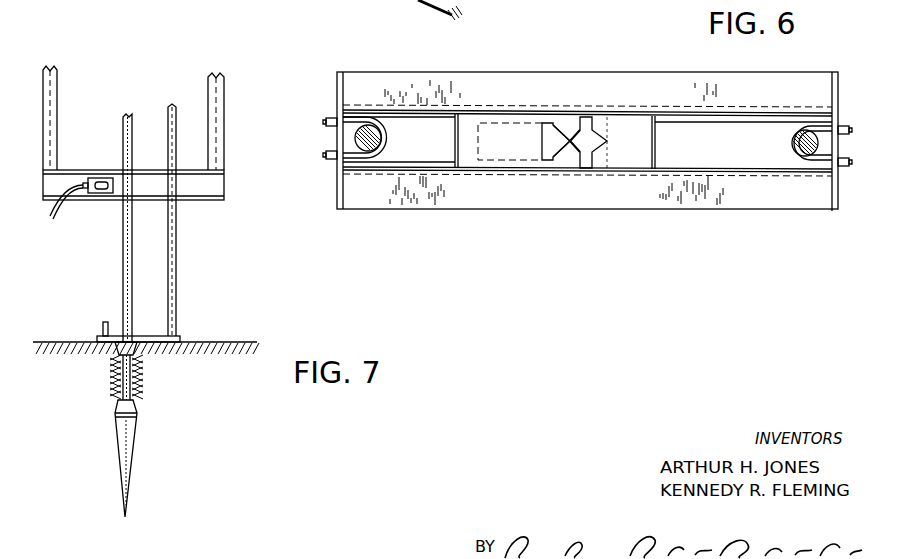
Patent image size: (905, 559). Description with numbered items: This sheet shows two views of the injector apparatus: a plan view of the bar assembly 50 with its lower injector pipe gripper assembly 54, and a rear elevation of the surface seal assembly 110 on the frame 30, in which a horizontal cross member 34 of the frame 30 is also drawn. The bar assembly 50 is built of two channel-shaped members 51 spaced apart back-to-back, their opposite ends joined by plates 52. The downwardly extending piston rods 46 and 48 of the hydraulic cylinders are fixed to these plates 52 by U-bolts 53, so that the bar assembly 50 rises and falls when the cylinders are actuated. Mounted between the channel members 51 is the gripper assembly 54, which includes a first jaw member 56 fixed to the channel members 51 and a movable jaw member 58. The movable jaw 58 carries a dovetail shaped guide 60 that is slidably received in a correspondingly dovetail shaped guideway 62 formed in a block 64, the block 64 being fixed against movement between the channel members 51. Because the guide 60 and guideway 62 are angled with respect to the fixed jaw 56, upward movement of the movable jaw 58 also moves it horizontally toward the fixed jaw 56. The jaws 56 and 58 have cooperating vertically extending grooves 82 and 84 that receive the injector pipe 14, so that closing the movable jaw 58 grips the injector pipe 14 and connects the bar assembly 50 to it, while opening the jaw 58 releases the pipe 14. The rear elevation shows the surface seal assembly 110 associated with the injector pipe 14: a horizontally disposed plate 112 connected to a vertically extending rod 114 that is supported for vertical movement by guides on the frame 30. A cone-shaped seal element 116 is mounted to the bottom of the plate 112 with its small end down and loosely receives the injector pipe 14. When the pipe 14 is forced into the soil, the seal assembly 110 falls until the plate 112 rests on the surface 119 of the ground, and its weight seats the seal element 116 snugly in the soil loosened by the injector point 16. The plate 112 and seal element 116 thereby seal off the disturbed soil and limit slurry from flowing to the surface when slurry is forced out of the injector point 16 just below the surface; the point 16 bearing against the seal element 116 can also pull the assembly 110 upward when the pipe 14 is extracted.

In FIG. 7, the injector pipe 14 is at (124, 267).
In FIG. 7, the injector point 16 is at (134, 468).
In FIG. 7, the frame 30 is at (65, 102).
In FIG. 7, the cross bar with junction box 34 is at (202, 190).
In FIG. 6, the piston rod 46 is at (800, 138).
In FIG. 6, the piston rod 48 is at (378, 133).
In FIG. 6, the bar assembly 50 is at (658, 89).
In FIG. 6, the channel-shaped members 51 is at (393, 80).
In FIG. 6, the plates 52 is at (337, 92).
In FIG. 6, the U-bolts 53 is at (385, 150).
In FIG. 6, the lower injector pipe gripper assembly 54 is at (654, 148).
In FIG. 6, the first jaw member 56 is at (638, 156).
In FIG. 6, the movable jaw member 58 is at (560, 119).
In FIG. 6, the dovetail shaped guide 60 is at (547, 148).
In FIG. 6, the dovetail shaped guideway 62 is at (545, 137).
In FIG. 6, the block 64 is at (468, 156).
In FIG. 6, the vertically extending groove 82 is at (597, 137).
In FIG. 6, the vertically extending groove 84 is at (575, 137).
In FIG. 7, the surface seal assembly 110 is at (181, 340).
In FIG. 7, the horizontally disposed plate 112 is at (146, 338).
In FIG. 7, the vertically extending rod 114 is at (176, 278).
In FIG. 7, the cone-shaped seal element 116 is at (110, 364).
In FIG. 7, the surface of the ground 119 is at (47, 342).